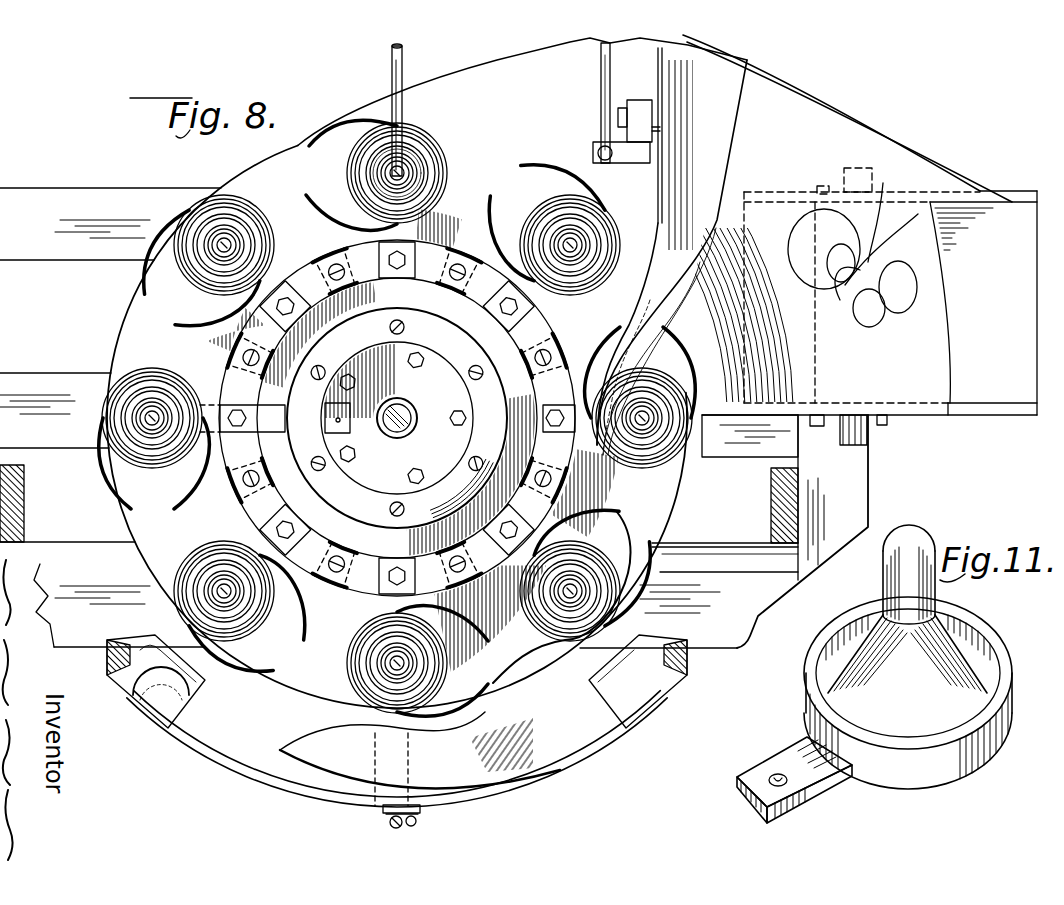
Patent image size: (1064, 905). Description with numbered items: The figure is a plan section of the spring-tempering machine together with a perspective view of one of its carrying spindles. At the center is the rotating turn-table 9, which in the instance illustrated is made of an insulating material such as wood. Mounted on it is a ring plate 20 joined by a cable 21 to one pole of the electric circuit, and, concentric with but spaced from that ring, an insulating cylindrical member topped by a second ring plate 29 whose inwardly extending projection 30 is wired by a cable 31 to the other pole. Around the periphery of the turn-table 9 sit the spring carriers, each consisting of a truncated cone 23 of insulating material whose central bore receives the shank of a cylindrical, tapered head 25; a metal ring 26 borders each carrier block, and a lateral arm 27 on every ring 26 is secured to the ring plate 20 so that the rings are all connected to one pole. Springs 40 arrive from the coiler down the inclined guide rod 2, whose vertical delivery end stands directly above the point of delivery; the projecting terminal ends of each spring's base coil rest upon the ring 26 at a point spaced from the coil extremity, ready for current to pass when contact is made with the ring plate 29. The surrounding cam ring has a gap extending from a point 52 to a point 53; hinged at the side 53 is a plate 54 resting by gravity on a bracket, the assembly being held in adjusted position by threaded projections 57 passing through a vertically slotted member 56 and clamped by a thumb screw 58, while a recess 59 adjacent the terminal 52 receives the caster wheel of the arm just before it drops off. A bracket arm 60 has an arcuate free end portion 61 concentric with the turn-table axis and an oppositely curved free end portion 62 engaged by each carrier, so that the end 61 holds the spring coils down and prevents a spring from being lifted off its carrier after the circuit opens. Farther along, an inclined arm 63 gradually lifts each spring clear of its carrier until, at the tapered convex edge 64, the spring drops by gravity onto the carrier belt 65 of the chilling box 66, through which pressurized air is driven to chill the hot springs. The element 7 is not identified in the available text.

The guide rod 2 is at (402, 48).
The top spool 7 is at (416, 175).
The turn-table 9 is at (254, 172).
The ring plate 20 is at (223, 381).
The cable 21 is at (272, 420).
The truncated cone 23 is at (237, 228).
The head 25 is at (224, 246).
The metal ring 26 is at (247, 222).
The arm 27 is at (271, 288).
The ring plate 29 is at (441, 328).
The inwardly extending projection 30 is at (334, 421).
The cable 31 is at (352, 425).
The spring 40 is at (432, 134).
The point 52 is at (190, 707).
The point 53 is at (612, 702).
The plate 54 is at (357, 748).
The vertically slotted member 56 is at (419, 808).
The threaded projections 57 is at (367, 821).
The thumb screw 58 is at (389, 821).
The recess 59 is at (163, 692).
The bracket arm 60 is at (727, 547).
The free end portion 61 is at (600, 680).
The free end portion 62 is at (487, 686).
The arm 63 is at (620, 327).
The convex edge 64 is at (720, 169).
The carrier belt 65 is at (1012, 388).
The chilling box 66 is at (961, 415).